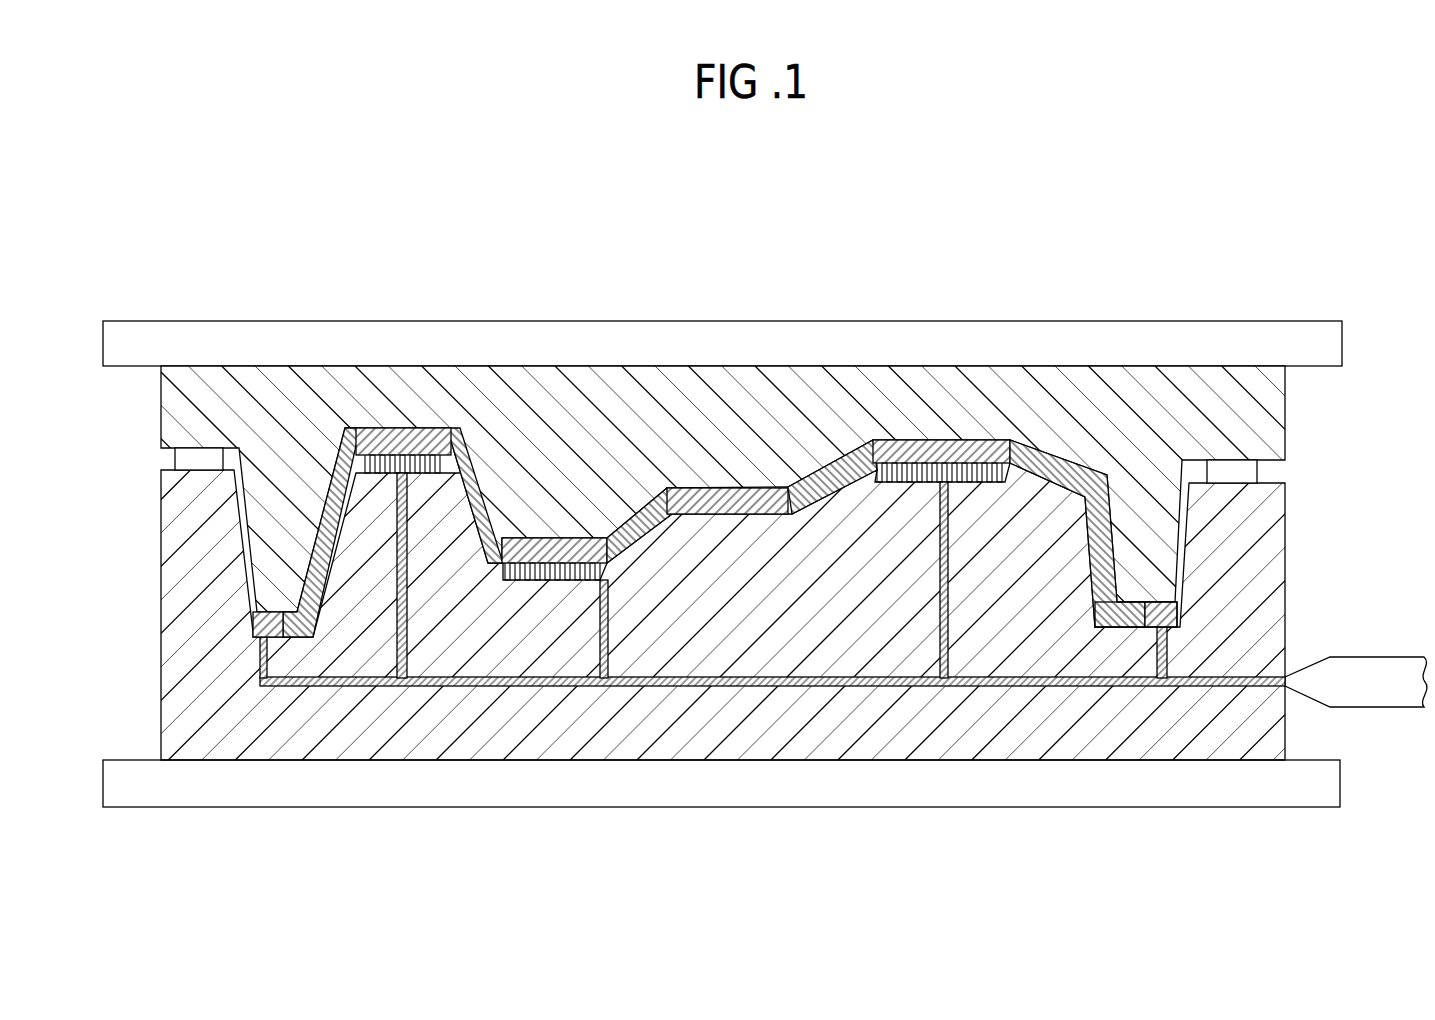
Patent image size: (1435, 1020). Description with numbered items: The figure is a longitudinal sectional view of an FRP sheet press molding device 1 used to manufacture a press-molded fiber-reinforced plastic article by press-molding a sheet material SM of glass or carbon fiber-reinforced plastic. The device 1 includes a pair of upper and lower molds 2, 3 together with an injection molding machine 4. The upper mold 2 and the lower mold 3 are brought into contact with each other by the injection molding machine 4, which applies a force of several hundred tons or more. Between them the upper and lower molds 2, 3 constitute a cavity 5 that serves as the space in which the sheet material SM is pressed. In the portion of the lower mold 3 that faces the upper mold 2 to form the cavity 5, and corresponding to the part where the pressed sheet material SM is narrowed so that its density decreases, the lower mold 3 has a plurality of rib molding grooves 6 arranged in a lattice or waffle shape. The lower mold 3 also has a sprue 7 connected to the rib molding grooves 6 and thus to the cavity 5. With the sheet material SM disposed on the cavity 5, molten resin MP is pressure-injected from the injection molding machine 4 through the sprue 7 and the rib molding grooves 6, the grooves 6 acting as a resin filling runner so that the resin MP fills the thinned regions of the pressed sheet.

The FRP sheet press molding device 1 is at (1302, 238).
The upper mold 2 is at (1287, 418).
The lower mold 3 is at (1283, 737).
The injection molding machine 4 is at (1353, 655).
The cavity 5 is at (1196, 472).
The rib molding grooves 6 is at (1020, 478).
The sprue 7 is at (1077, 687).
The sheet material SM is at (742, 487).
The molten resin MP is at (1208, 680).